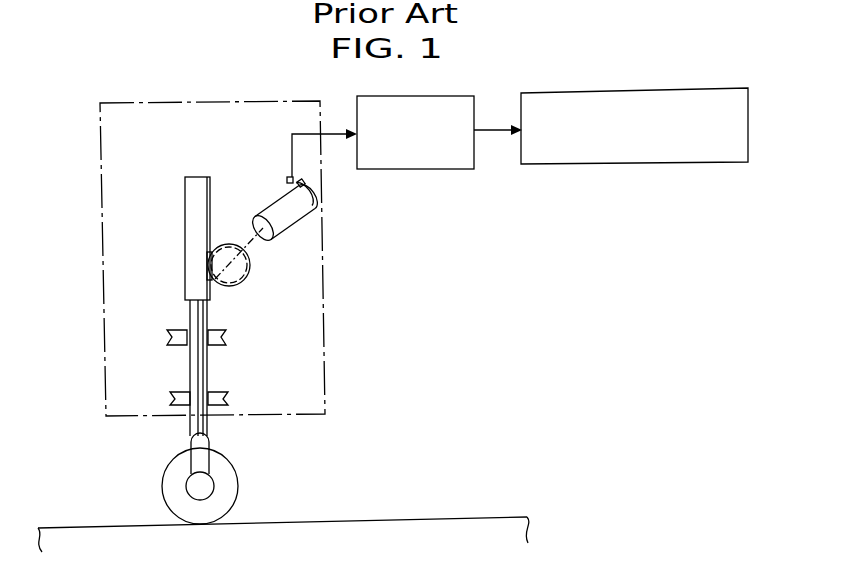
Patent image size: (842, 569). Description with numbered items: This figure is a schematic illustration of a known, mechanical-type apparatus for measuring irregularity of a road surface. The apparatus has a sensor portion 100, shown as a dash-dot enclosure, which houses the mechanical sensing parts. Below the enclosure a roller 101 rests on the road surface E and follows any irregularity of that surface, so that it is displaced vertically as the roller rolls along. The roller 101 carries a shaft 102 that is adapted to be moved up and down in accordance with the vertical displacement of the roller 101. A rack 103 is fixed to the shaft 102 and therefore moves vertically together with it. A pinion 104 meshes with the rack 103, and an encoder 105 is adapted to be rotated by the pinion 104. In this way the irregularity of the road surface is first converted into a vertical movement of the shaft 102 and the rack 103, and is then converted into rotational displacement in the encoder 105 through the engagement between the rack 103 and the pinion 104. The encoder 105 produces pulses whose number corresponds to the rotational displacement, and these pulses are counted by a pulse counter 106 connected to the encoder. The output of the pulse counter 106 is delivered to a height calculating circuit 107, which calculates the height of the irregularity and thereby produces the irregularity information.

The sensor portion 100 is at (96, 152).
The roller 101 is at (238, 477).
The shaft 102 is at (191, 431).
The rack 103 is at (210, 205).
The pinion 104 is at (242, 285).
The encoder 105 is at (289, 229).
The pulse counter 106 is at (415, 170).
The height calculating circuit 107 is at (622, 164).
The ground surface E is at (87, 527).